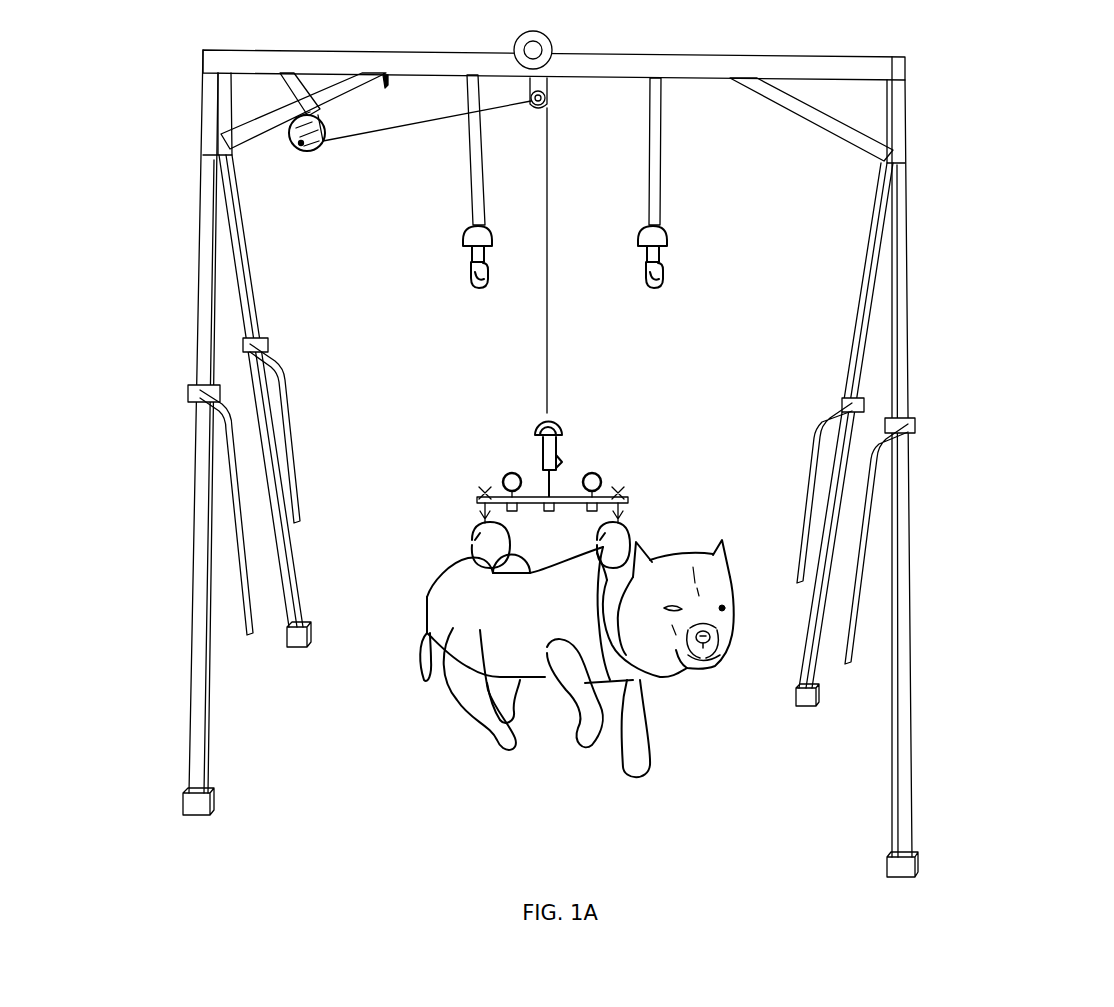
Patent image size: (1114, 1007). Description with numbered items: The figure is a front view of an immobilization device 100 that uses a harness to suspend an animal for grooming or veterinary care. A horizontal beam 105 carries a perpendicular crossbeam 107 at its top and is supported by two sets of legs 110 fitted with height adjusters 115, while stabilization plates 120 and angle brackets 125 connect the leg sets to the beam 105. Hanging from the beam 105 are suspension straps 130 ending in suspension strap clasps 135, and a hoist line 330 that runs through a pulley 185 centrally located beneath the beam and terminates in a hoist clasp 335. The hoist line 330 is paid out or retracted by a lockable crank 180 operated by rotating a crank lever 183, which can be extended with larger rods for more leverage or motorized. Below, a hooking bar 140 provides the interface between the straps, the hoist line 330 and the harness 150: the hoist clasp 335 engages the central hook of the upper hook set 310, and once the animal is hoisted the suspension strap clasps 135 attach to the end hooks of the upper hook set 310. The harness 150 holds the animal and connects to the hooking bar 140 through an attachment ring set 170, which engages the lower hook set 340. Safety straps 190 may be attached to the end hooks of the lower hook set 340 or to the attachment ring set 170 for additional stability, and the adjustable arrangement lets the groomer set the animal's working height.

The immobilization device 100 is at (982, 42).
The beam 105 is at (660, 53).
The crossbeam 107 is at (554, 45).
The legs 110 is at (200, 261).
The height adjusters 115 is at (188, 393).
The stabilization plates 120 is at (224, 100).
The angle brackets 125 is at (256, 136).
The suspension straps 130 is at (470, 191).
The suspension strap clasps 135 is at (484, 287).
The hooking bar 140 is at (630, 500).
The harness 150 is at (567, 658).
The attachment ring set 170 is at (470, 549).
The lockable crank 180 is at (318, 151).
The crank lever 183 is at (313, 73).
The pulley 185 is at (548, 98).
The safety straps 190 is at (301, 523).
The upper hook set 310 is at (503, 478).
The hoist line 330 is at (421, 119).
The hoist clasp 335 is at (563, 460).
The lower hook set 340 is at (480, 510).